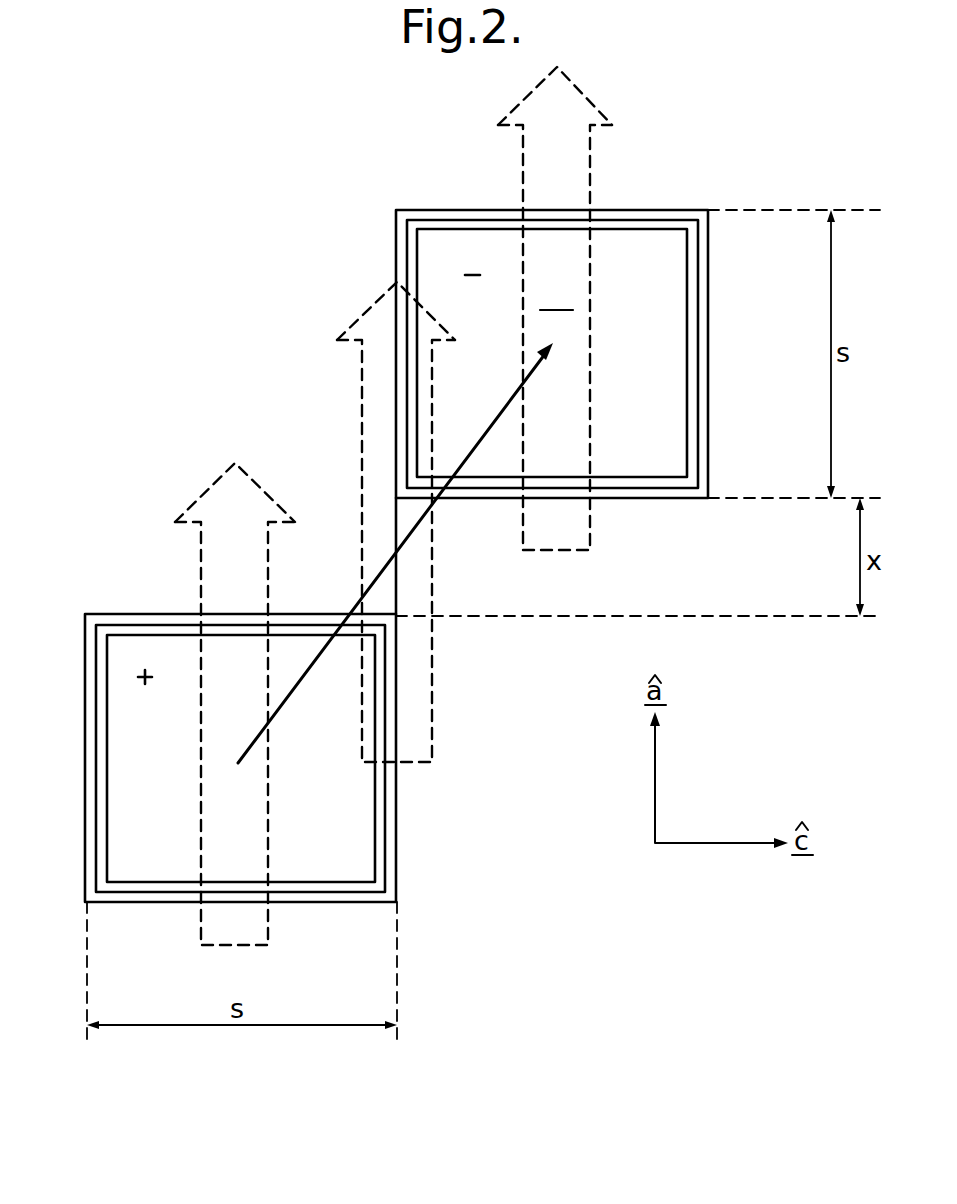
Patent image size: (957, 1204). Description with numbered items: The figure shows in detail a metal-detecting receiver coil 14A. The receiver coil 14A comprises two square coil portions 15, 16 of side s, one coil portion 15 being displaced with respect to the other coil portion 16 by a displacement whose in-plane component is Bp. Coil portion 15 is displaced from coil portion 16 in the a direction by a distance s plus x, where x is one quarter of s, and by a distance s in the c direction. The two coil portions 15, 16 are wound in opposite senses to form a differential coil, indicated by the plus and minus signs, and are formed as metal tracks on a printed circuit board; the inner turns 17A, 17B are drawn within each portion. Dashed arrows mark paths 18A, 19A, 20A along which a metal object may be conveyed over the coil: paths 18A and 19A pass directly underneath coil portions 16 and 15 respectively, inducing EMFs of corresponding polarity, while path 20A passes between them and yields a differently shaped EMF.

The receiver coil 14A is at (139, 458).
The coil portion 15 is at (656, 210).
The coil portion 16 is at (85, 758).
The inner winding of upper coil 17A is at (428, 240).
The inner winding of lower coil 17B is at (362, 882).
The path 18A is at (260, 518).
The path 19A is at (555, 308).
The path 20A is at (362, 315).